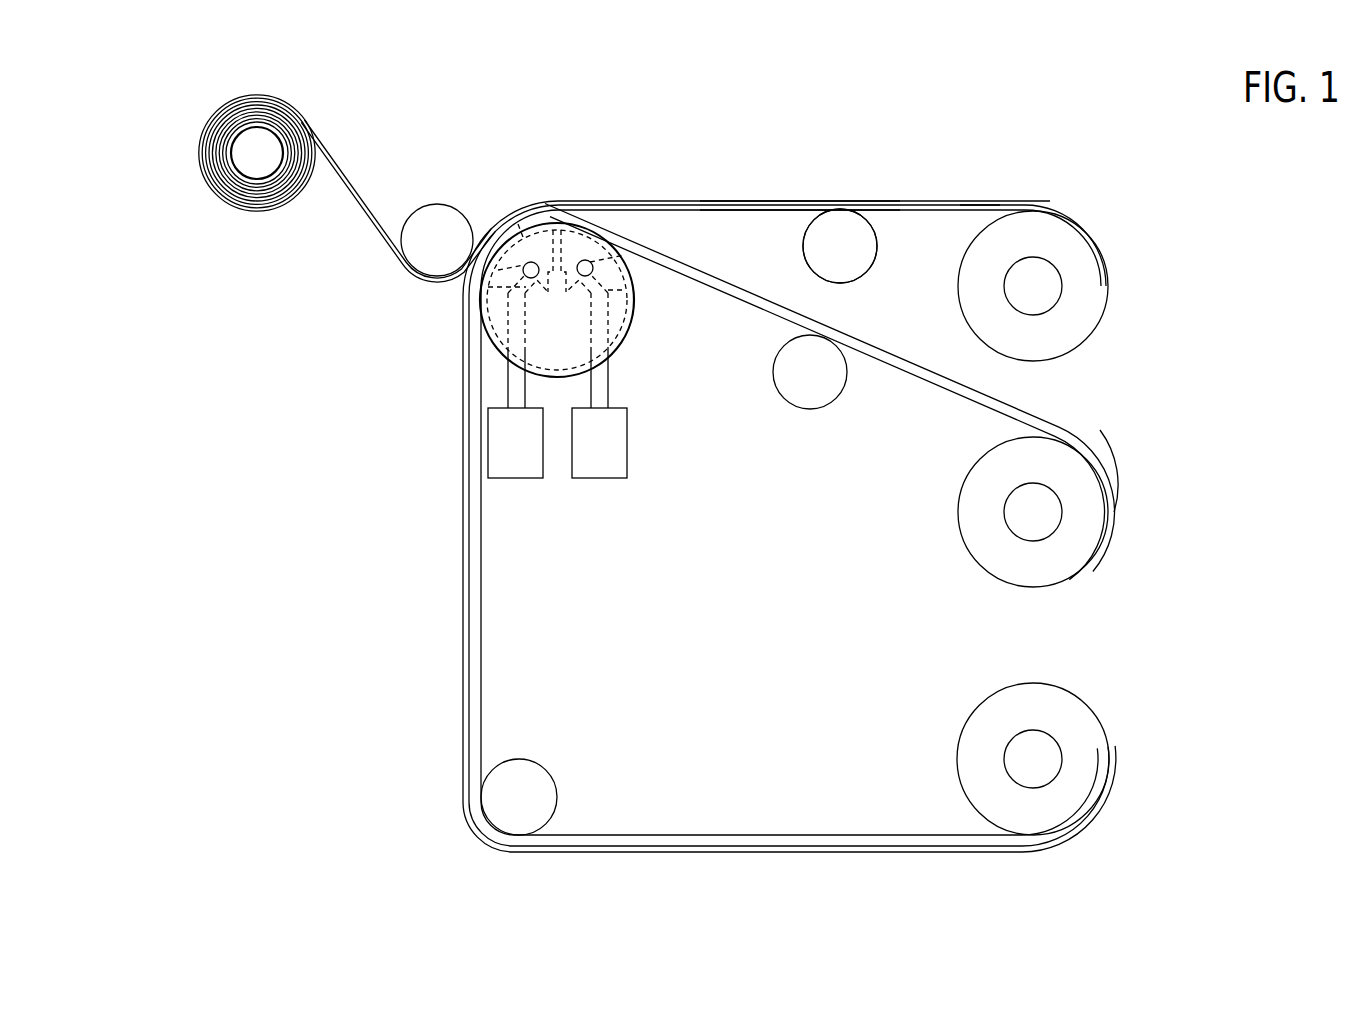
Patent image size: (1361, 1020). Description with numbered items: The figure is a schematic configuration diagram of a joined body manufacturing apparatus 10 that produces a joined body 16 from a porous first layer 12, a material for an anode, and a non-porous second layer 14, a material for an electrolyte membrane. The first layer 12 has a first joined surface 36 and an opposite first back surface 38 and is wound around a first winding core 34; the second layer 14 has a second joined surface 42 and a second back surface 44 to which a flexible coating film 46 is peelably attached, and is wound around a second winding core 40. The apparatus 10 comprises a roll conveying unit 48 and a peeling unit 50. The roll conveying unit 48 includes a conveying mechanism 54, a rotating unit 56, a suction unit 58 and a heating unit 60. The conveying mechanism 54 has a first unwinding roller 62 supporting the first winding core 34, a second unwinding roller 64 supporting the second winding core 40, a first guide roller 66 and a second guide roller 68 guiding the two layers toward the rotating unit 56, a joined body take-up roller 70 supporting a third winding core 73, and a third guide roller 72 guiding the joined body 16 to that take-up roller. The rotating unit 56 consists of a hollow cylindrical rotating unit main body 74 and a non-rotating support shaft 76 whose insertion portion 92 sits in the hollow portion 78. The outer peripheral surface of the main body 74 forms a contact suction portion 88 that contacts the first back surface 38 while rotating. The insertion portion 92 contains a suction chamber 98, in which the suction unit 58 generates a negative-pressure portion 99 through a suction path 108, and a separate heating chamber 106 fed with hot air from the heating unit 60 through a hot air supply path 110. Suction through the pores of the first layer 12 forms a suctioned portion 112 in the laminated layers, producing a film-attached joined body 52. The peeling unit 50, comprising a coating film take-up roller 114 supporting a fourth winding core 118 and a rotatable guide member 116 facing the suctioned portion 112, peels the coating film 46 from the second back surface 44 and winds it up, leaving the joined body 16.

The joined body manufacturing apparatus 10 is at (1203, 134).
The first layer 12 is at (792, 354).
The second layer 14 is at (978, 200).
The joined body 16 is at (458, 630).
The first winding core 34 is at (1025, 512).
The first joined surface 36 is at (913, 362).
The first back surface 38 is at (903, 372).
The second winding core 40 is at (1062, 286).
The second joined surface 42 is at (905, 211).
The second back surface 44 is at (930, 201).
The coating film 46 is at (348, 180).
The roll conveying unit 48 is at (832, 136).
The peeling unit 50 is at (433, 116).
The film-attached joined body 52 is at (486, 217).
The conveying mechanism 54 is at (1132, 521).
The rotating unit 56 is at (563, 259).
The suction unit 58 is at (518, 473).
The heating unit 60 is at (603, 473).
The first unwinding roller 62 is at (1015, 513).
The second unwinding roller 64 is at (1045, 275).
The first guide roller 66 is at (812, 400).
The second guide roller 68 is at (860, 262).
The joined body take-up roller 70 is at (1072, 759).
The third guide roller 72 is at (532, 782).
The third winding core 73 is at (1060, 780).
The rotating unit main body 74 is at (631, 331).
The support shaft 76 is at (628, 302).
The hollow portion 78 is at (570, 333).
The contact suction portion 88 is at (535, 226).
The insertion portion 92 is at (497, 332).
The suction chamber 98 is at (523, 237).
The negative-pressure portion 99 is at (518, 224).
The heating chamber 106 is at (584, 242).
The suction path 108 is at (523, 273).
The hot air supply path 110 is at (605, 262).
The suctioned portion 112 is at (562, 192).
The coating film take-up roller 114 is at (253, 165).
The guide member 116 is at (418, 262).
The fourth winding core 118 is at (232, 147).